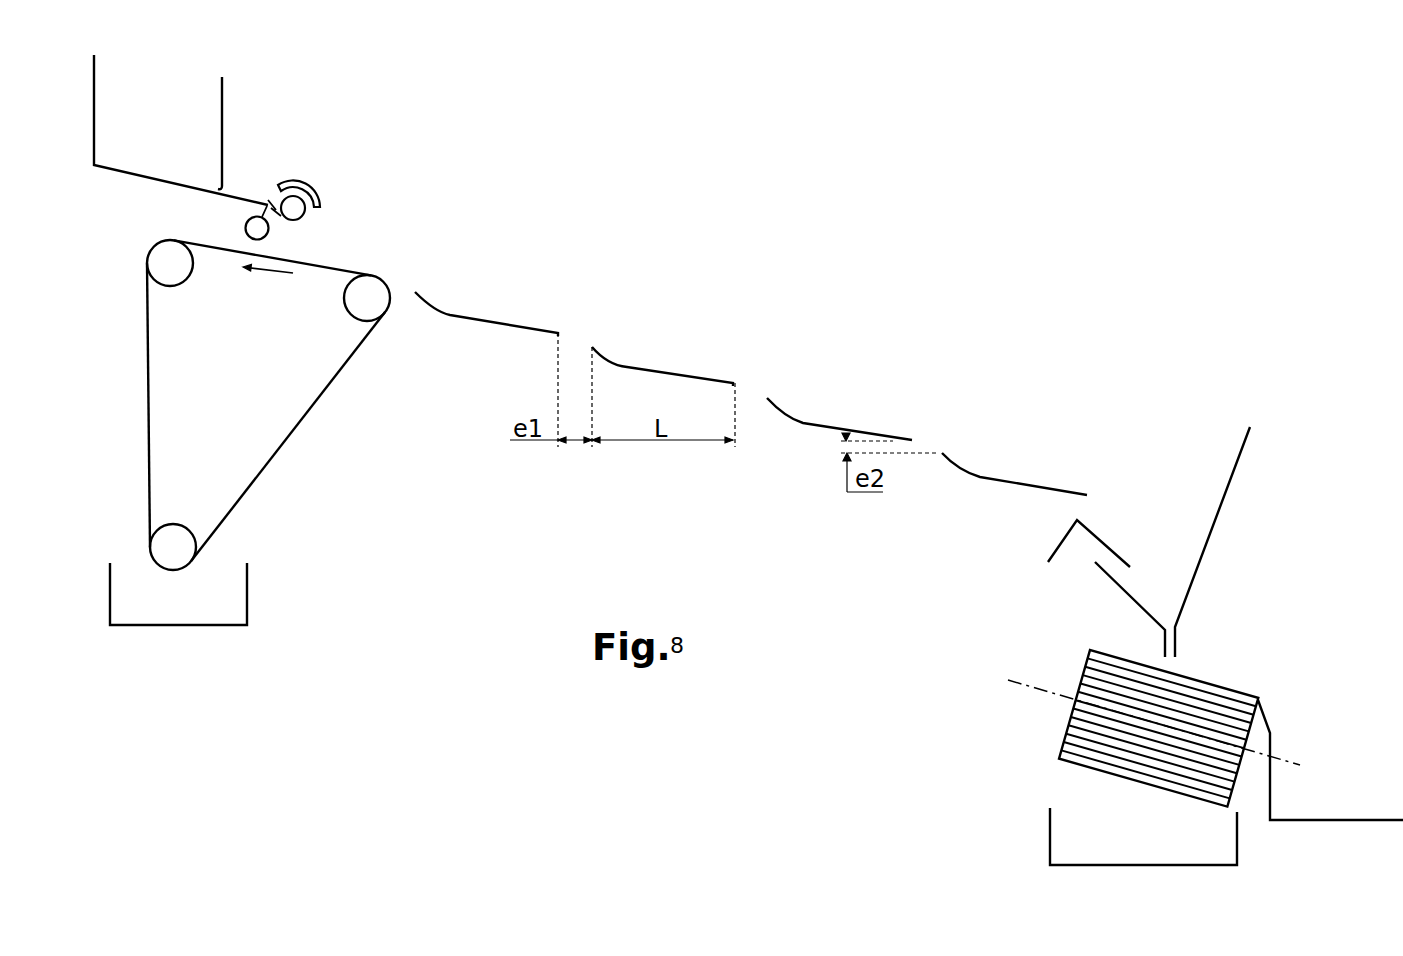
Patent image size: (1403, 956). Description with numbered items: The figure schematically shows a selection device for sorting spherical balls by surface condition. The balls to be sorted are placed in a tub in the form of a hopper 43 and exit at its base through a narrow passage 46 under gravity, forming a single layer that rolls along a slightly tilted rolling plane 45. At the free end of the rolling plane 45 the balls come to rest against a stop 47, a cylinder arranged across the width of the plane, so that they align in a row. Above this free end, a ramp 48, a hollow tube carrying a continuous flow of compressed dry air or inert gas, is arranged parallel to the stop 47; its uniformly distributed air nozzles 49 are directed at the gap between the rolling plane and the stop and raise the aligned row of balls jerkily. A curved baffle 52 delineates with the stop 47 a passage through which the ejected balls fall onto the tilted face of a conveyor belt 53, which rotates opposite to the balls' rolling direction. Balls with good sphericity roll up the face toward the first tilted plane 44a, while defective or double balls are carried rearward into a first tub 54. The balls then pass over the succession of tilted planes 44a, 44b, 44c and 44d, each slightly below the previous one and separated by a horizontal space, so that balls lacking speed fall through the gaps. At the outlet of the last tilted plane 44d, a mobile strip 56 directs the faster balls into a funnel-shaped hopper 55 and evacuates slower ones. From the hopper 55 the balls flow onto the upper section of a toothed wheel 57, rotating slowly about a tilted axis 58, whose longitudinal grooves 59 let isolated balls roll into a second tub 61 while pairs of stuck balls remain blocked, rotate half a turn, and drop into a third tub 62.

The hopper 43 is at (212, 118).
The rolling plane 45 is at (252, 196).
The narrow passage 46 is at (225, 186).
The stop 47 is at (298, 212).
The ramp 48 is at (244, 221).
The air nozzles 49 is at (291, 222).
The baffle 52 is at (319, 195).
The conveyor belt 53 is at (313, 405).
The first tub 54 is at (237, 598).
The first tilted plane 44a is at (506, 325).
The second tilted plane 44b is at (667, 373).
The third tilted plane 44c is at (823, 428).
The last tilted plane 44d is at (1025, 482).
The hopper 55 is at (1207, 507).
The mobile strip 56 is at (1052, 537).
The toothed wheel 57 is at (1040, 750).
The tilted axis 58 is at (1008, 681).
The longitudinal grooves 59 is at (1223, 690).
The second tub 61 is at (1339, 806).
The third tub 62 is at (1055, 847).